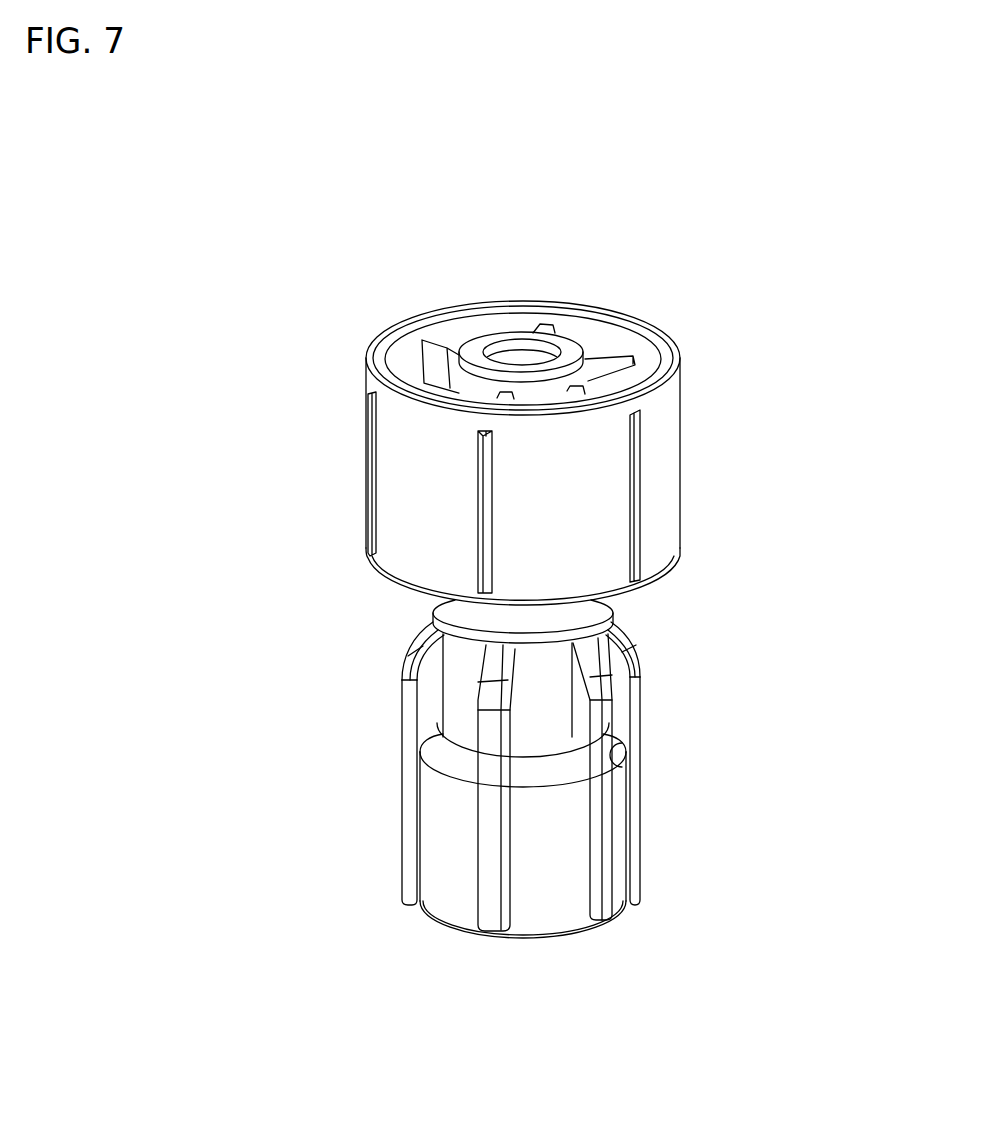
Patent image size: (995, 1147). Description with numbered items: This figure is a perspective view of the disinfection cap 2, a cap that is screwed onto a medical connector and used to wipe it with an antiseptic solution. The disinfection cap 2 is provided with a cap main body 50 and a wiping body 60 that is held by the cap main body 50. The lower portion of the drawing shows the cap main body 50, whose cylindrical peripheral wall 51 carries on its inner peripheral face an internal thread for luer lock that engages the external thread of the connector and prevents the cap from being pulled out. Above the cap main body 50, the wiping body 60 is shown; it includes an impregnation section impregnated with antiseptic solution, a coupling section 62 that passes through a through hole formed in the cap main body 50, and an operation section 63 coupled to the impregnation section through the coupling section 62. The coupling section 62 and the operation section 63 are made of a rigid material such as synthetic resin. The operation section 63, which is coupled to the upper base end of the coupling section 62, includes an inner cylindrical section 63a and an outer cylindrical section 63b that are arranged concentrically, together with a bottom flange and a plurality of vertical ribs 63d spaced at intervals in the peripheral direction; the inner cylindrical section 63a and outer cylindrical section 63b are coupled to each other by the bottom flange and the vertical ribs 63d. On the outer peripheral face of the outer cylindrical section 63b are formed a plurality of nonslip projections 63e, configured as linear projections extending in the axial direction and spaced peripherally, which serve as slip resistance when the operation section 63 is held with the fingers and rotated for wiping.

The disinfection cap 2 is at (742, 276).
The cap main body 50 is at (644, 735).
The cylindrical peripheral wall 51 is at (623, 828).
The wiping body 60 is at (683, 464).
The coupling section 62 is at (553, 620).
The operation section 63 is at (680, 520).
The inner cylindrical section 63a is at (518, 336).
The outer cylindrical section 63b is at (612, 312).
The vertical ribs 63d is at (446, 349).
The nonslip projections 63e is at (646, 424).